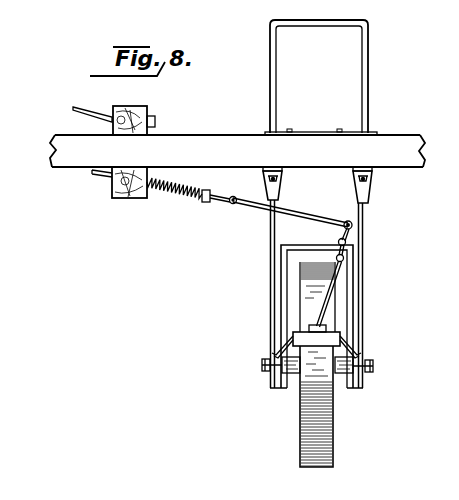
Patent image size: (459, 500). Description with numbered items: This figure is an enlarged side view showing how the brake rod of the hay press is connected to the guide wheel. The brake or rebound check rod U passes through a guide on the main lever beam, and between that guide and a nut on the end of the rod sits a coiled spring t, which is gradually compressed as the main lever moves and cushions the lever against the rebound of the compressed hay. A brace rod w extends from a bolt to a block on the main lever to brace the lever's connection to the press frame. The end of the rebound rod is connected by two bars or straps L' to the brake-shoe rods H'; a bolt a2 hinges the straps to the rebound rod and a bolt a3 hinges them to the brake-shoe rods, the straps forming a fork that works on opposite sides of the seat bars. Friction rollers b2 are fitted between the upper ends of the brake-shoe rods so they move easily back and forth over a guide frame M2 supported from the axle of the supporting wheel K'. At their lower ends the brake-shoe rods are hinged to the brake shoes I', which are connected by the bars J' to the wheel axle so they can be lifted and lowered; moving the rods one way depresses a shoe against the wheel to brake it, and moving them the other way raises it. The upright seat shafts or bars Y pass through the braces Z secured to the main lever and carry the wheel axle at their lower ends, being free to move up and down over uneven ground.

The brace rod w is at (67, 110).
The brake or rebound check rod U is at (93, 180).
The coiled spring t is at (175, 191).
The bolt a2 is at (237, 194).
The bars or straps L' is at (290, 212).
The bolt a3 is at (354, 225).
The friction rollers b2 is at (347, 241).
The upright shafts or bars Y is at (270, 105).
The braces Z is at (385, 188).
The guide frame M2 is at (312, 250).
The brake-shoe rods H' is at (353, 296).
The brake shoes I' is at (316, 399).
The bars J' is at (314, 343).
The supporting wheel K' is at (301, 385).